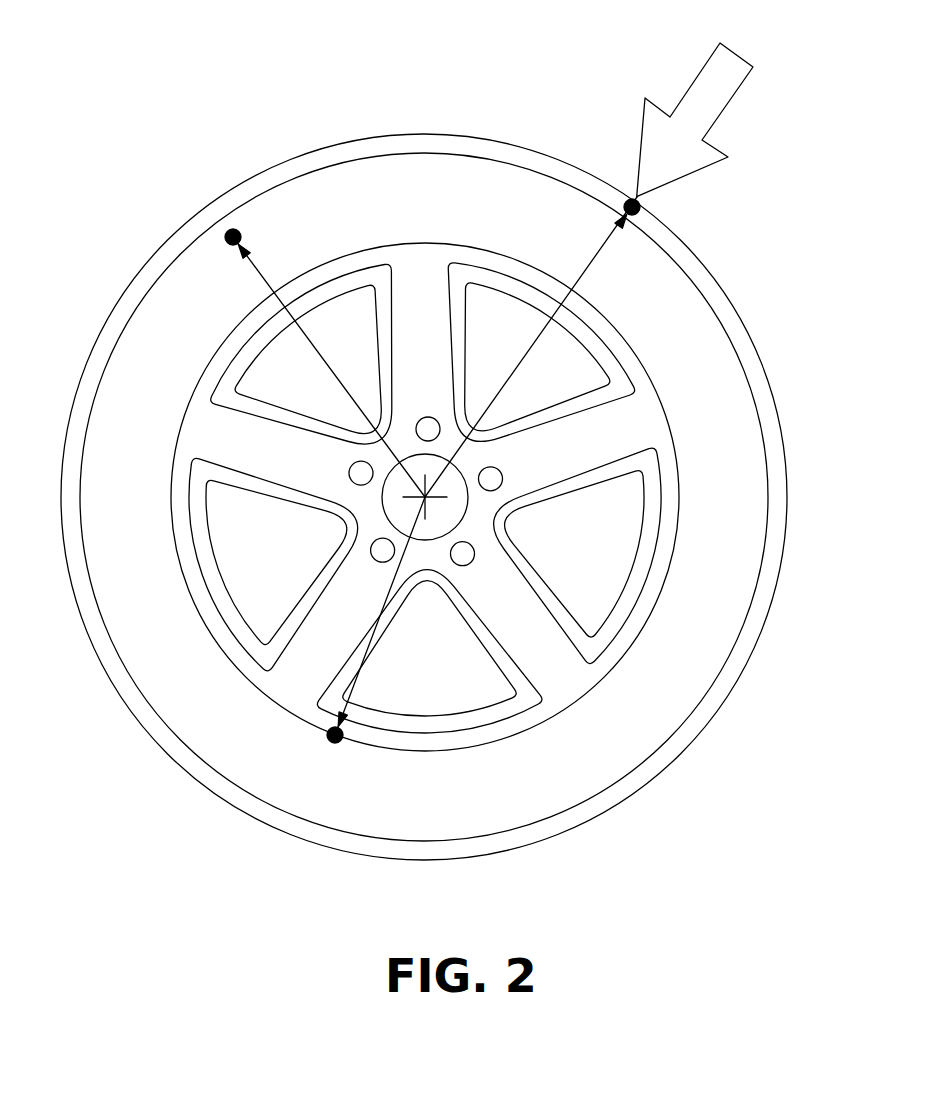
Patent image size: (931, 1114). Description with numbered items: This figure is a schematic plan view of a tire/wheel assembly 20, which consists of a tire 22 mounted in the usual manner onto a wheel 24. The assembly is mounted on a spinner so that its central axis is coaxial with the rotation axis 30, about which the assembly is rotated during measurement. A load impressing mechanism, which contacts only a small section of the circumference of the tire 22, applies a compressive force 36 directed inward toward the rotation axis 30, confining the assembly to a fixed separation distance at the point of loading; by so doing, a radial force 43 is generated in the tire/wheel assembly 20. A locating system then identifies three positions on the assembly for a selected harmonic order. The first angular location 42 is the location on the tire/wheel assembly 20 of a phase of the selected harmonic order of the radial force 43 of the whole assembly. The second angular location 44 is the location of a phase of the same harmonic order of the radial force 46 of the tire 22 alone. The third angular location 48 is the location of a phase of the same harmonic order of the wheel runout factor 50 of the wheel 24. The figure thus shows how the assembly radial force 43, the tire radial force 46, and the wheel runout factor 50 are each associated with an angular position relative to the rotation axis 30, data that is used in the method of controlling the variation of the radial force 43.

The tire/wheel assembly 20 is at (217, 120).
The tire 22 is at (497, 187).
The wheel 24 is at (627, 428).
The rotation axis 30 is at (428, 500).
The compressive force 36 is at (727, 72).
The first angular location 42 is at (640, 213).
The radial force 43 is at (500, 388).
The second angular location 44 is at (227, 238).
The radial force 46 is at (348, 388).
The third angular location 48 is at (327, 733).
The wheel runout factor 50 is at (355, 693).